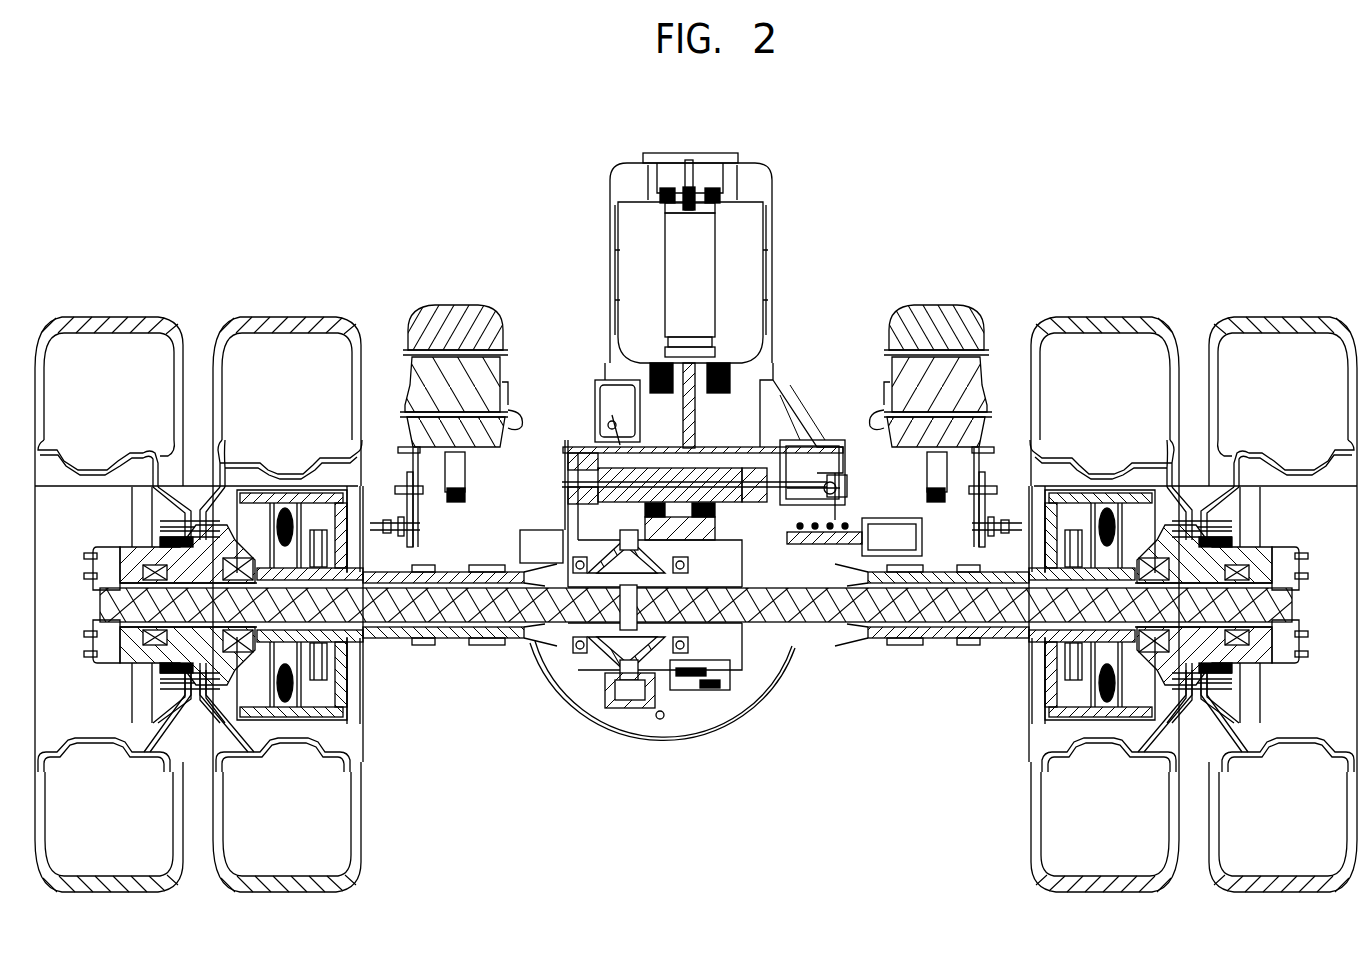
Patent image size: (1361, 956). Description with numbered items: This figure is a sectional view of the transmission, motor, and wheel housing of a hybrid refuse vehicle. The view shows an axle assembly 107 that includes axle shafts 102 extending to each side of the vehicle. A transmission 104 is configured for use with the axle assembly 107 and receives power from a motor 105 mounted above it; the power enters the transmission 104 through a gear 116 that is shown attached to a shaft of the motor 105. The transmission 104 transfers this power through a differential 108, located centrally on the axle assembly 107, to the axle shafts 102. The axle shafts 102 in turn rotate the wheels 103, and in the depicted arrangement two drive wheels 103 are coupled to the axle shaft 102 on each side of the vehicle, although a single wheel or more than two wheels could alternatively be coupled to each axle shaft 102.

The axle shaft 102 is at (447, 622).
The wheel 103 is at (340, 740).
The transmission 104 is at (687, 738).
The motor 105 is at (737, 220).
The axle assembly 107 is at (545, 482).
The differential 108 is at (585, 665).
The gear 116 is at (765, 403).